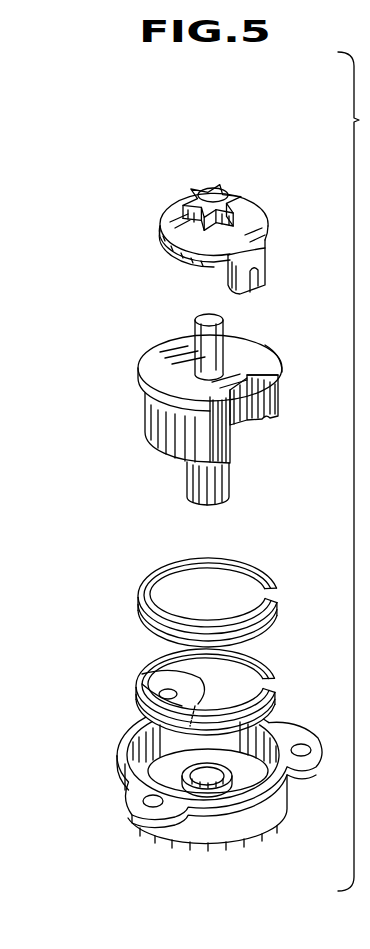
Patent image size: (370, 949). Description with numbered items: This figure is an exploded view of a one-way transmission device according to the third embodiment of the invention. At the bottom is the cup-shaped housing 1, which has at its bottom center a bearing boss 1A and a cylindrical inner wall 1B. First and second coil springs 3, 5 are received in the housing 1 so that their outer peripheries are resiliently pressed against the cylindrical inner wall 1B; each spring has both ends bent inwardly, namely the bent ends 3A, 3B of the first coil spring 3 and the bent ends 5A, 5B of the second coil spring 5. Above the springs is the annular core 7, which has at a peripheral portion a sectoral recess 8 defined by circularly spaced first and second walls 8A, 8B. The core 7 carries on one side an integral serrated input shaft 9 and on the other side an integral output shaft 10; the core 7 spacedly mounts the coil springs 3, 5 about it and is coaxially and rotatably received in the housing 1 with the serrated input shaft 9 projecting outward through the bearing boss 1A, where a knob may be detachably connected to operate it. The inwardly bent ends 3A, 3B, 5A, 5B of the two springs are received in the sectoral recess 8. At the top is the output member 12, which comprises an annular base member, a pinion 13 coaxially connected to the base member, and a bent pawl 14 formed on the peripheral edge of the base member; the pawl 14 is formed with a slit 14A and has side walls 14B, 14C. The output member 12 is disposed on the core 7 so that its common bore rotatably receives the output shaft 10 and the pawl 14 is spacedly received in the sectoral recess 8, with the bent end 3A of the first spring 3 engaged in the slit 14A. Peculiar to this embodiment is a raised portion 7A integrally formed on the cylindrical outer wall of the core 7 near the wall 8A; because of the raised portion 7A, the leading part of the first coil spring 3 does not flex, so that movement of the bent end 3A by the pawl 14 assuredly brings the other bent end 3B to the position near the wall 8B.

The cup-shaped housing 1 is at (177, 830).
The bearing boss 1A is at (241, 784).
The cylindrical inner wall 1B is at (148, 753).
The first coil spring 3 is at (283, 699).
The bent end of first coil spring 3A is at (276, 683).
The bent end of first coil spring 3B is at (142, 674).
The second coil spring 5 is at (278, 621).
The bent end of second coil spring 5A is at (260, 587).
The bent end of second coil spring 5B is at (238, 646).
The annular core 7 is at (155, 373).
The raised portion 7A is at (276, 355).
The sectoral recess 8 is at (245, 437).
The first wall 8A is at (272, 393).
The second wall 8B is at (209, 426).
The serrated input shaft 9 is at (196, 485).
The output shaft 10 is at (205, 345).
The output member 12 is at (220, 164).
The pinion 13 is at (196, 182).
The bent pawl 14 is at (268, 271).
The slit 14A is at (254, 288).
The side wall of pawl 14B is at (270, 249).
The side wall of pawl 14C is at (229, 279).